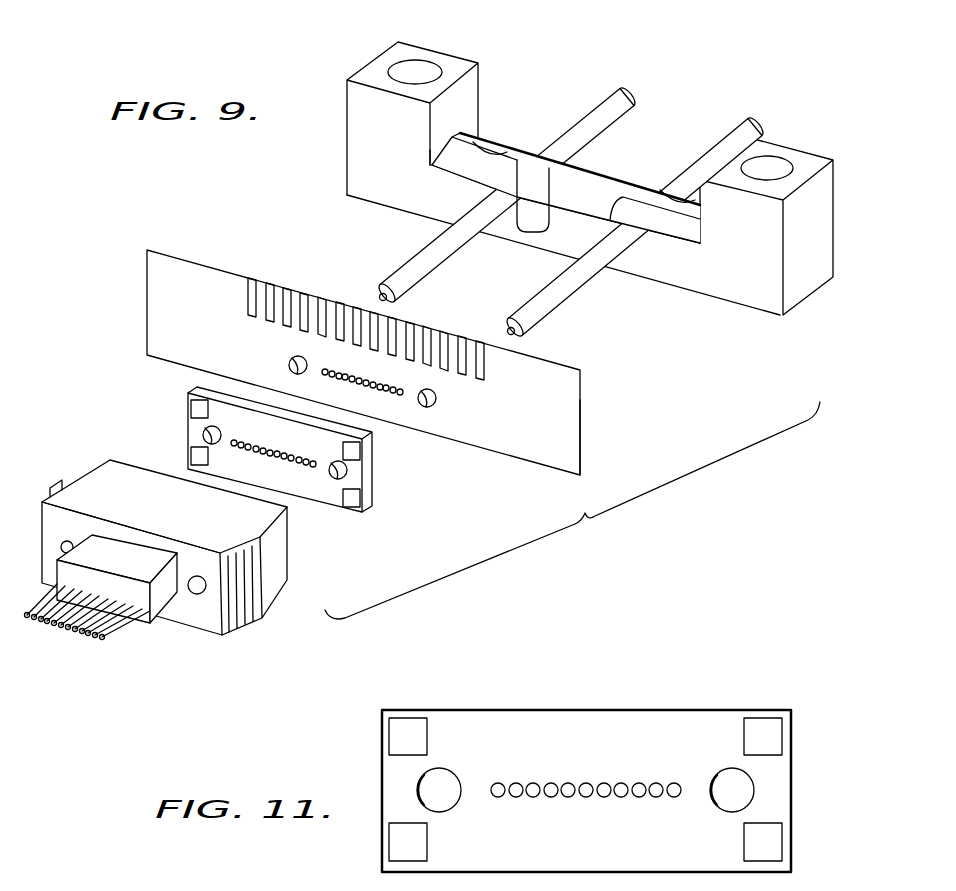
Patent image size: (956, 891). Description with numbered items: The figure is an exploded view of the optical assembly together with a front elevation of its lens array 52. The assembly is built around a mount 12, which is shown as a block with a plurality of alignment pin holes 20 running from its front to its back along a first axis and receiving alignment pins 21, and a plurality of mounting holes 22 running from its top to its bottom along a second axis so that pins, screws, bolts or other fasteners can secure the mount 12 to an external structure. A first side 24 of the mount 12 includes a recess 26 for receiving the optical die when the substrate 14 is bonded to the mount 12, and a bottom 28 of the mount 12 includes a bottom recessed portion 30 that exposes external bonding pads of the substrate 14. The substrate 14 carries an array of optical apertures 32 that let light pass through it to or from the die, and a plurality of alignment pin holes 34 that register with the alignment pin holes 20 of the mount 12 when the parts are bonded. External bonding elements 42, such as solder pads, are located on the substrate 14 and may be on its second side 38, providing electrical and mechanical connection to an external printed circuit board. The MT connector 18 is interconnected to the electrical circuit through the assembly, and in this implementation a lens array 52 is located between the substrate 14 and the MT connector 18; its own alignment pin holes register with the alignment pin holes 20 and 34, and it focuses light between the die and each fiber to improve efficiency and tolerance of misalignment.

In FIG. 9, the mount 12 is at (541, 159).
In FIG. 9, the substrate 14 is at (364, 335).
In FIG. 9, the MT connector 18 is at (203, 614).
In FIG. 9, the alignment pin holes 20 is at (505, 175).
In FIG. 9, the alignment pins 21 is at (618, 97).
In FIG. 9, the mounting holes 22 is at (403, 72).
In FIG. 9, the first side of the mount 24 is at (420, 160).
In FIG. 9, the recess 26 is at (570, 227).
In FIG. 9, the bottom of the mount 28 is at (565, 99).
In FIG. 9, the bottom recessed portion 30 is at (563, 169).
In FIG. 9, the optical apertures 32 is at (402, 395).
In FIG. 9, the alignment pin holes 34 is at (287, 365).
In FIG. 9, the second side 38 is at (556, 409).
In FIG. 9, the external bonding elements 42 is at (337, 308).
In FIG. 9, the lens array 52 is at (196, 432).
In FIG. 11, the lens array 52 is at (615, 721).